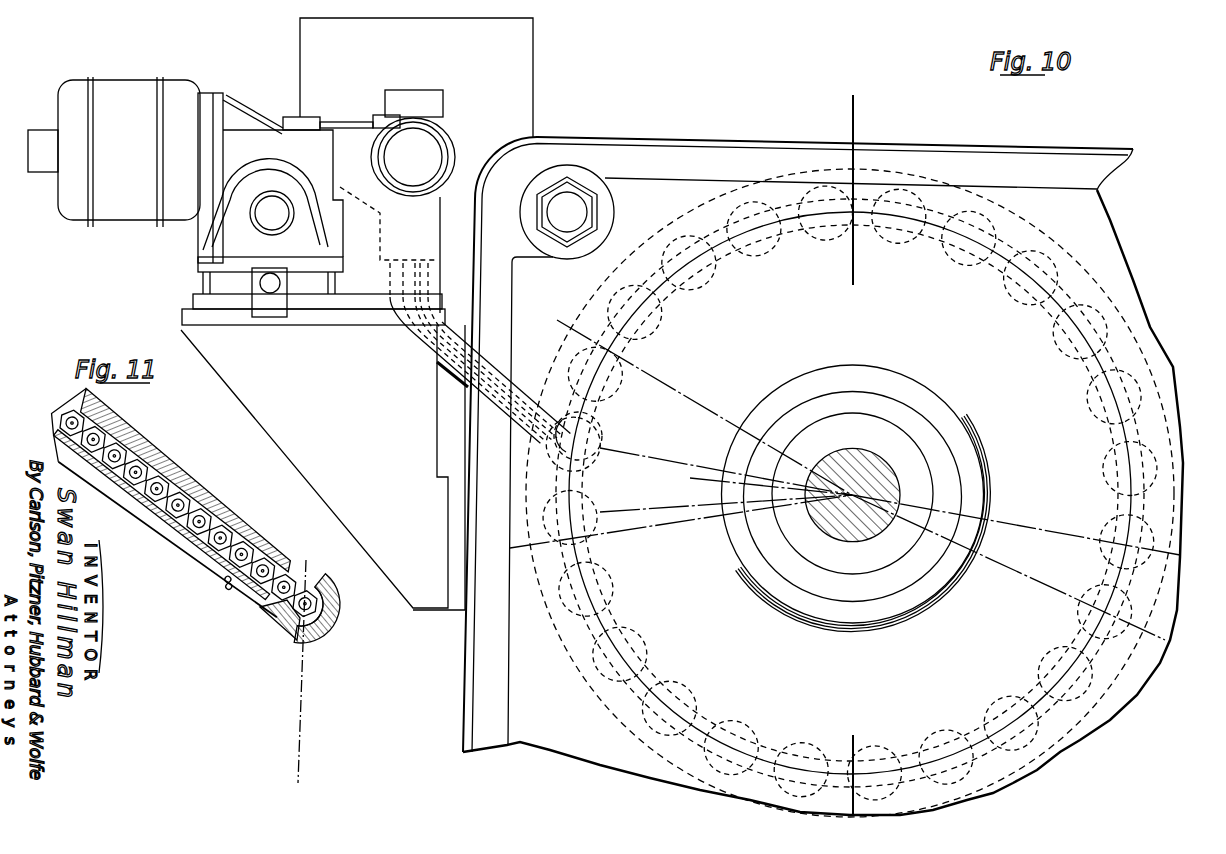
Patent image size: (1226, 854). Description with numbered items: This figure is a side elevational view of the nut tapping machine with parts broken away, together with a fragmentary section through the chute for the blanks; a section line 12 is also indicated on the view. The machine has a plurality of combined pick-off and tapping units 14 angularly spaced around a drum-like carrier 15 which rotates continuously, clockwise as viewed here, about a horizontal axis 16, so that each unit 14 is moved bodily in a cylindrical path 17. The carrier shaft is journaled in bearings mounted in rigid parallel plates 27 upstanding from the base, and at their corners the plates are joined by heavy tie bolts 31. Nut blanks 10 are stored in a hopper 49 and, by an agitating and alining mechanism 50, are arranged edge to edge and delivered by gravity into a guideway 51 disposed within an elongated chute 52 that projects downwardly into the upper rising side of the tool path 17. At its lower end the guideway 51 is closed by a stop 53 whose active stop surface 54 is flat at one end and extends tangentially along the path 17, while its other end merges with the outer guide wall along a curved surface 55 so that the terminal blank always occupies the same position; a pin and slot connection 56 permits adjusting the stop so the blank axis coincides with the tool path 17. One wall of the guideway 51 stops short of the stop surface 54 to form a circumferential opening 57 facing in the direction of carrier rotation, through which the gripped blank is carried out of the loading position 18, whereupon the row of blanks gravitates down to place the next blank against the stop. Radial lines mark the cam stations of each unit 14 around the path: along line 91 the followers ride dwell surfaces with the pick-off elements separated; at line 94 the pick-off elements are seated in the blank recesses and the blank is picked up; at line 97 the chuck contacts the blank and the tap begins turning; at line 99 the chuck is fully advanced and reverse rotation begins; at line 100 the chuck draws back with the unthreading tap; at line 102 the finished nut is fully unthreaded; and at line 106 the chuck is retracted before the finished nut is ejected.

In FIG. 11, the nut blank 10 is at (188, 502).
In FIG. 10, the section line 12- 12 is at (824, 117).
In FIG. 10, the combined pick-off and tapping unit 14 is at (1003, 280).
In FIG. 10, the drum-like carrier 15 is at (1056, 240).
In FIG. 10, the axis 16 is at (852, 497).
In FIG. 10, the cylindrical tool path 17 is at (748, 238).
In FIG. 11, the cylindrical tool path 17 is at (300, 668).
In FIG. 10, the loading position 18 is at (545, 448).
In FIG. 10, the plate 27 is at (1047, 158).
In FIG. 10, the tie bolt 31 is at (580, 200).
In FIG. 10, the hopper 49 is at (528, 66).
In FIG. 10, the agitating and alining mechanism 50 is at (458, 130).
In FIG. 10, the guideway 51 is at (430, 348).
In FIG. 11, the guideway 51 is at (72, 410).
In FIG. 10, the chute 52 is at (448, 372).
In FIG. 11, the chute 52 is at (140, 440).
In FIG. 11, the stop 53 is at (343, 609).
In FIG. 11, the stop surface 54 is at (322, 581).
In FIG. 11, the curved surface 55 is at (333, 632).
In FIG. 11, the pin and slot connection 56 is at (228, 592).
In FIG. 10, the circumferential opening 57 is at (588, 418).
In FIG. 11, the circumferential opening 57 is at (313, 567).
In FIG. 10, the line 91 is at (690, 479).
In FIG. 10, the line 94 is at (700, 458).
In FIG. 10, the line 97 is at (686, 396).
In FIG. 10, the line 99 is at (1051, 536).
In FIG. 10, the line 100 is at (1031, 580).
In FIG. 10, the line 102 is at (694, 527).
In FIG. 10, the line 106 is at (690, 508).